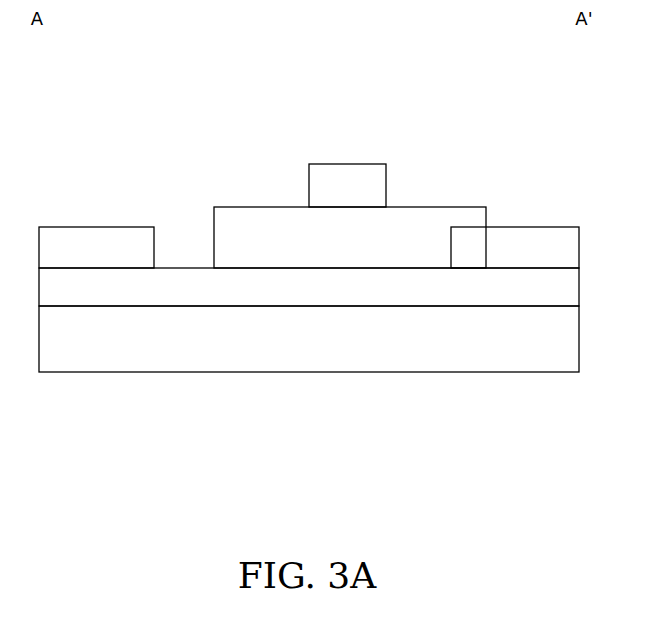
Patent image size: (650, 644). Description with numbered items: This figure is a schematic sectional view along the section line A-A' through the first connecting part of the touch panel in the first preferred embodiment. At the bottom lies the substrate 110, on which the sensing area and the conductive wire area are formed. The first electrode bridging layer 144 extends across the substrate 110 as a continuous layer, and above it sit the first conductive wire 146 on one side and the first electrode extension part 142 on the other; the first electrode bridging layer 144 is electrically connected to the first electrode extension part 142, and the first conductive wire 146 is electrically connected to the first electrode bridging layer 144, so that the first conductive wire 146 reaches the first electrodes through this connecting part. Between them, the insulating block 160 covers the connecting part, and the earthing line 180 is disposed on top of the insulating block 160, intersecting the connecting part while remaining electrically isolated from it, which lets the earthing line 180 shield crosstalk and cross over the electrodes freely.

The substrate 110 is at (284, 357).
The first electrode bridging layer 144 is at (284, 296).
The first conductive wire 146 is at (107, 244).
The first electrode extension part 142 is at (527, 244).
The insulating block 160 is at (260, 240).
The earthing line 180 is at (329, 198).